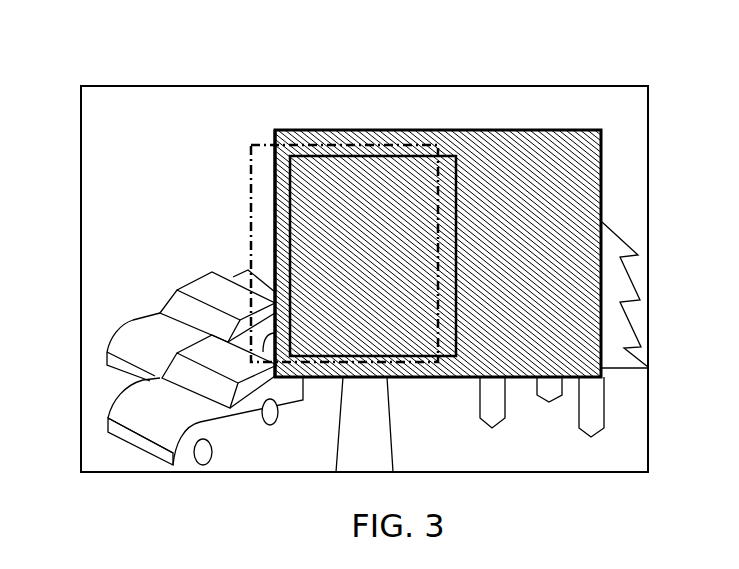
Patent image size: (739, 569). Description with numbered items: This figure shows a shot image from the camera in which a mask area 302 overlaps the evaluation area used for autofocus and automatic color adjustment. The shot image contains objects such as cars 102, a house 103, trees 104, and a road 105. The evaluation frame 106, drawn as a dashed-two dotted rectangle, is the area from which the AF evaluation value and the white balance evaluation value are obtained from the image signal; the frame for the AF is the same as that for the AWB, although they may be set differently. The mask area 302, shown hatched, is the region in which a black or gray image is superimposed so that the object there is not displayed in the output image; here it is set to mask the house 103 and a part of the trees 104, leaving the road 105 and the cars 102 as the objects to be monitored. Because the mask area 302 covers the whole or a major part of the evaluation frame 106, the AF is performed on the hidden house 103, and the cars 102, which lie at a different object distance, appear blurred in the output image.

The cars 102 is at (150, 412).
The house 103 is at (385, 195).
The trees 104 is at (525, 198).
The road 105 is at (385, 427).
The evaluation frame 106 is at (283, 178).
The mask area 302 is at (271, 263).